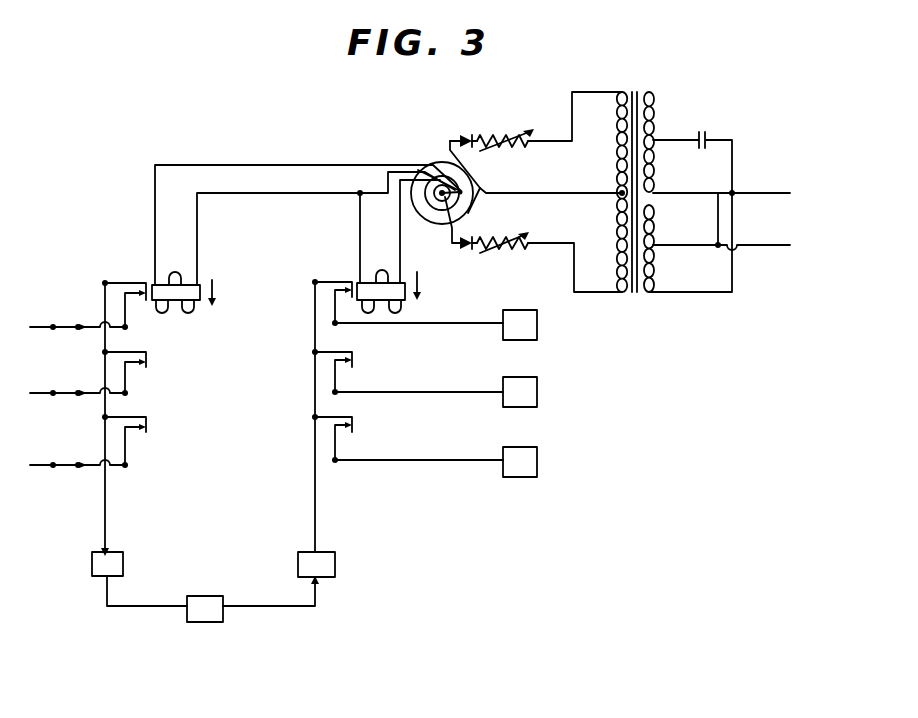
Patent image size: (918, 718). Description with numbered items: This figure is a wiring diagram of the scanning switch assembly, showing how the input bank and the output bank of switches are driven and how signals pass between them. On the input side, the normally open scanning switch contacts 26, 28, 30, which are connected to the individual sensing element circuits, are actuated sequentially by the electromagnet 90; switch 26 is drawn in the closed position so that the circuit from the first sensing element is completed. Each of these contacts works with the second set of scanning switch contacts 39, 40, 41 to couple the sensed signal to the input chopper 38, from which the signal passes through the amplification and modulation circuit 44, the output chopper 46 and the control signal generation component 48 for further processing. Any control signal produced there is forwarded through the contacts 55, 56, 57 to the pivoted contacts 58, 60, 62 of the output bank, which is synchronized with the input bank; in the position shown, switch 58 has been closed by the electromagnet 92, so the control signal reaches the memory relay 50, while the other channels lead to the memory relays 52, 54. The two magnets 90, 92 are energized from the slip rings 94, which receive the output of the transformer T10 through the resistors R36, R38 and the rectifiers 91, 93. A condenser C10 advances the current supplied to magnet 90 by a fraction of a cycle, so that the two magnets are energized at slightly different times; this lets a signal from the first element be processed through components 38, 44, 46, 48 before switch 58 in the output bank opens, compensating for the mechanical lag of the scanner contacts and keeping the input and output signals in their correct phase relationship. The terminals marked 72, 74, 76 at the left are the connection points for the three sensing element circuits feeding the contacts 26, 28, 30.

The scanning switch contact 26 is at (127, 311).
The scanning switch contact 28 is at (128, 385).
The scanning switch contact 30 is at (128, 457).
The input chopper 38 is at (122, 565).
The scanning switch contact 39 is at (127, 283).
The scanning switch contact 40 is at (148, 357).
The scanning switch contact 41 is at (148, 422).
The amplification and modulation circuit 44 is at (221, 590).
The output chopper 46 is at (203, 603).
The control signal generation component 48 is at (325, 565).
The memory relay 50 is at (530, 327).
The memory relay 52 is at (530, 394).
The memory relay 54 is at (530, 462).
The contact 55 is at (337, 282).
The contact 56 is at (353, 357).
The contact 57 is at (353, 422).
The pivoted contact 58 is at (335, 313).
The pivoted contact 60 is at (337, 378).
The pivoted contact 62 is at (337, 447).
The input terminal 72 is at (65, 326).
The input terminal 74 is at (65, 393).
The input terminal 76 is at (65, 465).
The electromagnet 90 is at (212, 281).
The rectifier 91 is at (460, 135).
The electromagnet 92 is at (402, 293).
The rectifier 93 is at (464, 234).
The slip rings 94 is at (445, 165).
The resistor R36 is at (497, 135).
The resistor R38 is at (502, 247).
The transformer T10 is at (645, 70).
The condenser C10 is at (698, 133).